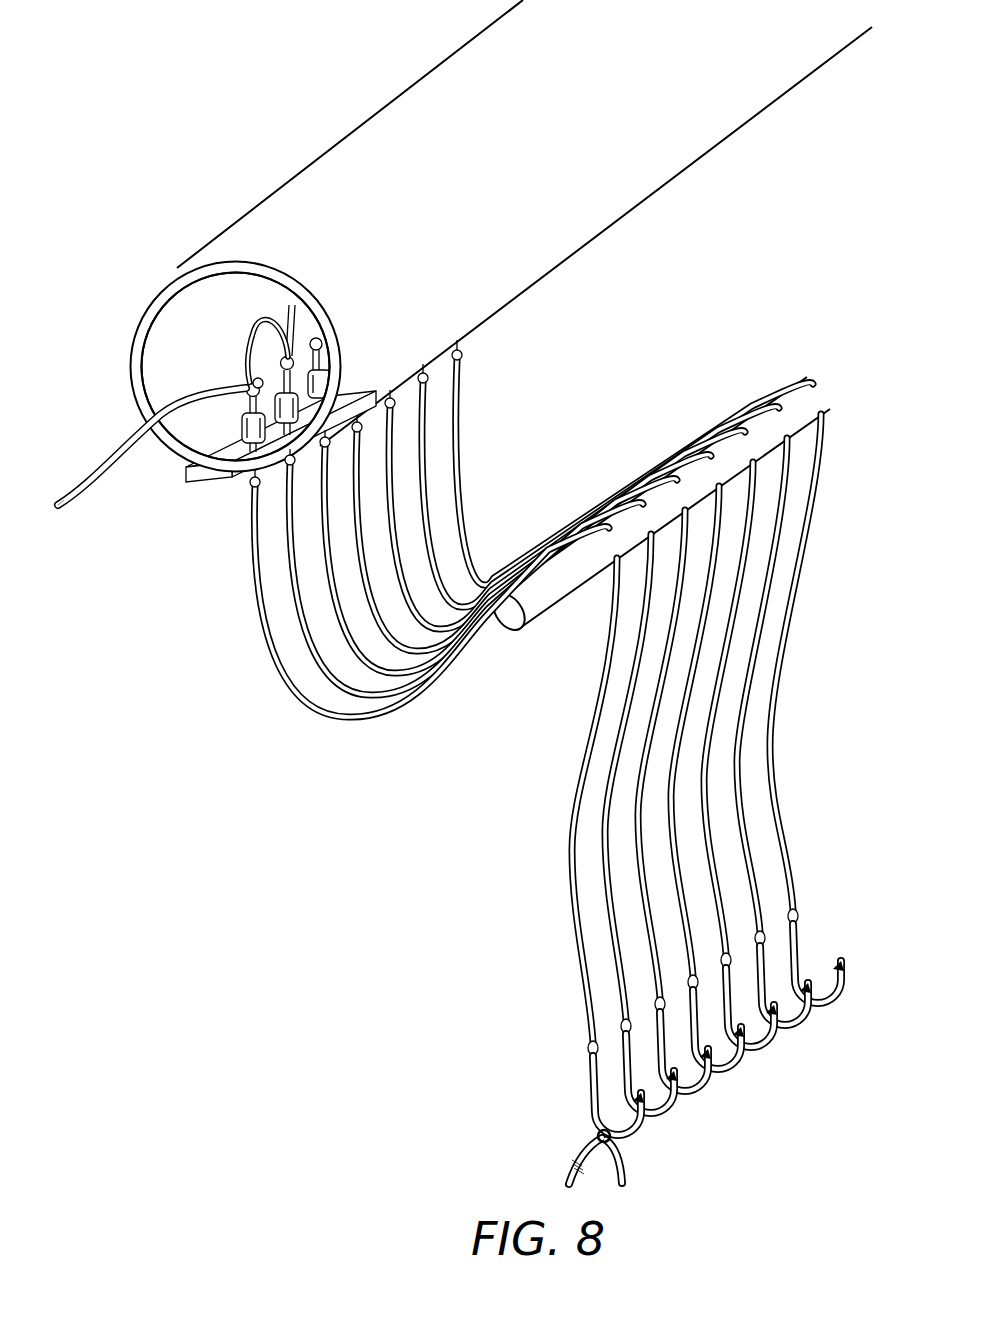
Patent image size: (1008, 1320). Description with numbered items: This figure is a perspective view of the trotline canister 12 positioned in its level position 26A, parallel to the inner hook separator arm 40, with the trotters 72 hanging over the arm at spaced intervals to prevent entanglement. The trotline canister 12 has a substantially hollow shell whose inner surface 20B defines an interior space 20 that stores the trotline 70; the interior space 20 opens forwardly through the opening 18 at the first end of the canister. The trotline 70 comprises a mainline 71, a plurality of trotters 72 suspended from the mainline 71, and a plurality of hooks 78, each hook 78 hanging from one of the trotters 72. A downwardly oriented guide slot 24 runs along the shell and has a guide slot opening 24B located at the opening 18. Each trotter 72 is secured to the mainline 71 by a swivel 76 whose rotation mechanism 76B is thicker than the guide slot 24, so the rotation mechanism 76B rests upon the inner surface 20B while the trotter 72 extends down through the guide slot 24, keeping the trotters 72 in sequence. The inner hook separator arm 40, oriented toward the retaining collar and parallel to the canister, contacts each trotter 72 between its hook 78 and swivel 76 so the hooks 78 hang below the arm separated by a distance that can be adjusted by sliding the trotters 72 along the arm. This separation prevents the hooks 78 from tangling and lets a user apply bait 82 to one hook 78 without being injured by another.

The trotline canister 12 is at (263, 223).
The opening 18 is at (135, 330).
The interior space 20 is at (157, 382).
The inner surface 20B is at (182, 361).
The guide slot 24 is at (290, 356).
The guide slot opening 24B is at (246, 486).
The level position 26A is at (511, 665).
The inner hook separator arm 40 is at (520, 628).
The trotline 70 is at (112, 500).
The mainline 71 is at (77, 492).
The trotters 72 is at (272, 720).
The swivel 76 is at (214, 428).
The rotation mechanism 76B is at (197, 466).
The hooks 78 is at (560, 1091).
The bait 82 is at (630, 1167).